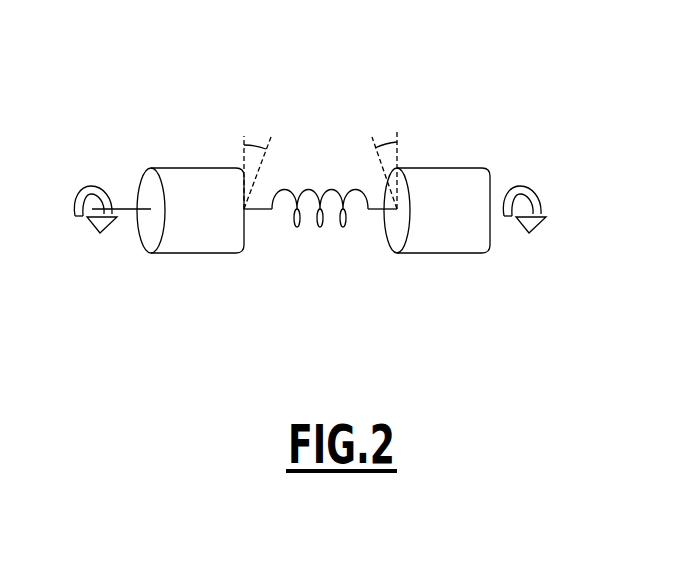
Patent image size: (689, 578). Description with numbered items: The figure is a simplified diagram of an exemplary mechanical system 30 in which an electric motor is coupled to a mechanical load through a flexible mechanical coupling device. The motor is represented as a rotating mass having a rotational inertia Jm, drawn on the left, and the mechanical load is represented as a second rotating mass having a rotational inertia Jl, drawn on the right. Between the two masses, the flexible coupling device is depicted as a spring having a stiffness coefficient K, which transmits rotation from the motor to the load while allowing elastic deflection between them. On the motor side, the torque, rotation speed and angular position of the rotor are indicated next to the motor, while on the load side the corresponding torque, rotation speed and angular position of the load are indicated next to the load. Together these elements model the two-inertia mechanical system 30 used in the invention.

The mechanical system 30 is at (308, 137).
The rotational inertia of the motor Jm is at (190, 210).
The stiffness coefficient K is at (320, 188).
The rotational inertia of the load Jl is at (437, 210).